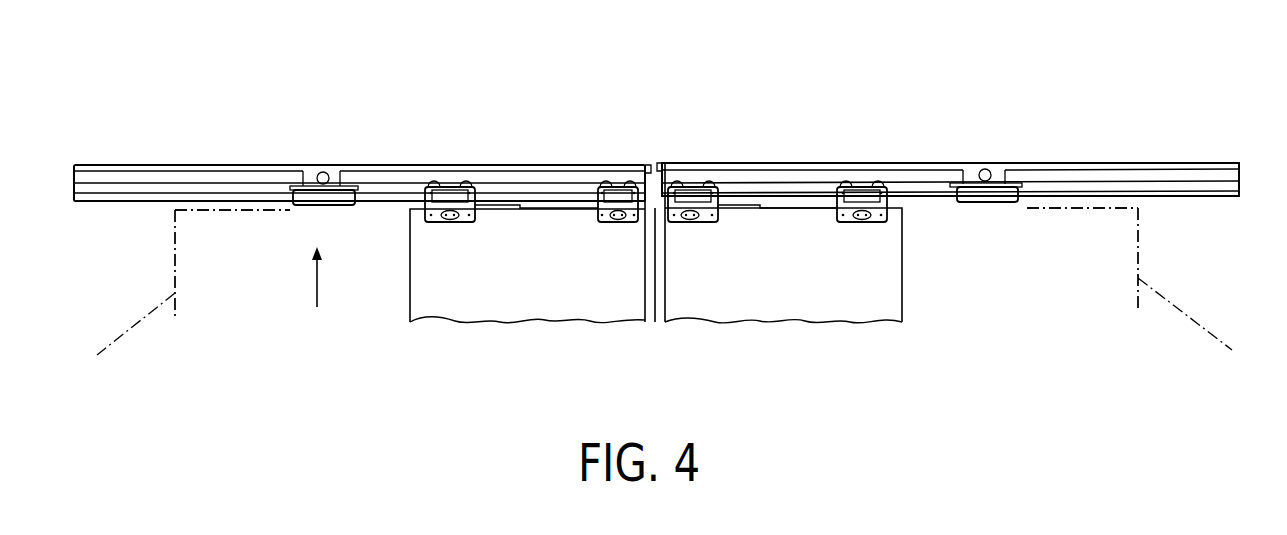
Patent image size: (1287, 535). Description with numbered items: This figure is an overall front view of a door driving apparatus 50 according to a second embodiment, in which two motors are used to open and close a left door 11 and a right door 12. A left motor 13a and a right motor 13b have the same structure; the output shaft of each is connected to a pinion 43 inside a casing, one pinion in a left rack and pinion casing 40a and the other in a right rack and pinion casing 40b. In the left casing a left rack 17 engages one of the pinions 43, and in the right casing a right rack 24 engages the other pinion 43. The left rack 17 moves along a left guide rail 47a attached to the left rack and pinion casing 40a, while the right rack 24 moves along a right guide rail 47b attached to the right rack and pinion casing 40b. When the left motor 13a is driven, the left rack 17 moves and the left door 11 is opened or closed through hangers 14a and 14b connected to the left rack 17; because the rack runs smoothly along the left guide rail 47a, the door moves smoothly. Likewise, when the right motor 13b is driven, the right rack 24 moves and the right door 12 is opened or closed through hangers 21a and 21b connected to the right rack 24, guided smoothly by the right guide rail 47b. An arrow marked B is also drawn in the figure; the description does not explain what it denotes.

The sliding track assembly 50 is at (643, 90).
The first rail 17 is at (490, 170).
The second rail 24 is at (790, 170).
The upper flange of first rail 47a is at (142, 178).
The upper flange of second rail 47b is at (1077, 172).
The first latch 13a is at (297, 168).
The second latch 13b is at (961, 168).
The latch clip with ball detent 43 is at (333, 178).
The first panel position outline 40a is at (132, 202).
The second panel position outline 40b is at (1188, 200).
The first panel 11 is at (565, 307).
The second panel 12 is at (797, 308).
The first panel mounting bracket 14a is at (450, 223).
The first panel mounting bracket 14b is at (612, 223).
The second panel mounting bracket 21a is at (692, 223).
The second panel mounting bracket 21b is at (848, 223).
The direction arrow B is at (320, 283).